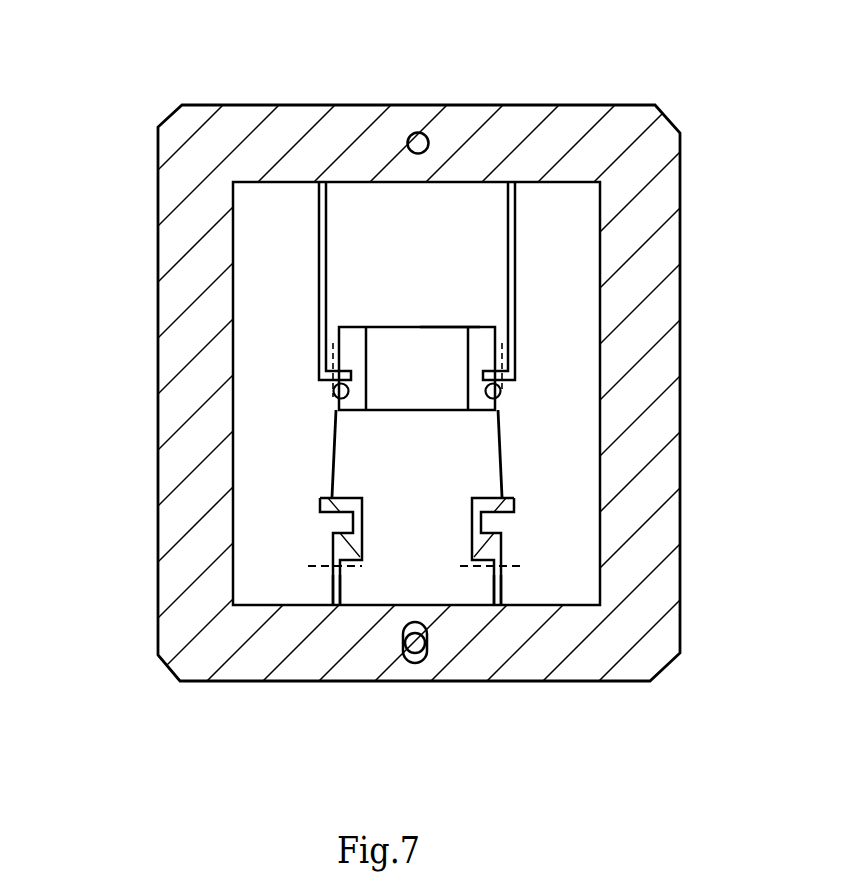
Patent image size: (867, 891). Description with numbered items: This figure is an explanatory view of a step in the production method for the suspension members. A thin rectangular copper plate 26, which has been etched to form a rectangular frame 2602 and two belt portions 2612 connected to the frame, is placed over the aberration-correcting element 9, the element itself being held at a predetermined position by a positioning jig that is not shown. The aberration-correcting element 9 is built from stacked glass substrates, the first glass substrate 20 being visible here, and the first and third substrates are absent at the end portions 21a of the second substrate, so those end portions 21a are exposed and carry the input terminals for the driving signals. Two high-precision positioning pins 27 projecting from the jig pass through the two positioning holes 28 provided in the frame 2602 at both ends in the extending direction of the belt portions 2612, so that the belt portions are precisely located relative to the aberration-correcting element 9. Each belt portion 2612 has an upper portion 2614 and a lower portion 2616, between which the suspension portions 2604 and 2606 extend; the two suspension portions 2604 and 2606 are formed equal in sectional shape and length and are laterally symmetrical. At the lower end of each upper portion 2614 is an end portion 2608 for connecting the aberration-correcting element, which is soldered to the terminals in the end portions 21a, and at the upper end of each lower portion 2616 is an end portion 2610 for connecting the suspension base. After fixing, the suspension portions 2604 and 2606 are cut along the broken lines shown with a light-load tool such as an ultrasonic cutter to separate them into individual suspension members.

The aberration-correcting element 9 is at (511, 173).
The first glass substrate 20 is at (351, 223).
The end portions 21a is at (416, 393).
The copper plate 26 is at (465, 393).
The positioning pins 27 is at (401, 386).
The positioning holes 28 is at (454, 389).
The frame 2602 is at (433, 395).
The suspension portion 2604 is at (189, 453).
The suspension portion 2606 is at (650, 451).
The end portion for connecting the aberration-correcting element 2608 is at (422, 372).
The end portion for connecting the suspension base 2610 is at (425, 552).
The belt portions 2612 is at (419, 300).
The upper portions 2614 is at (419, 263).
The lower portions 2616 is at (417, 667).